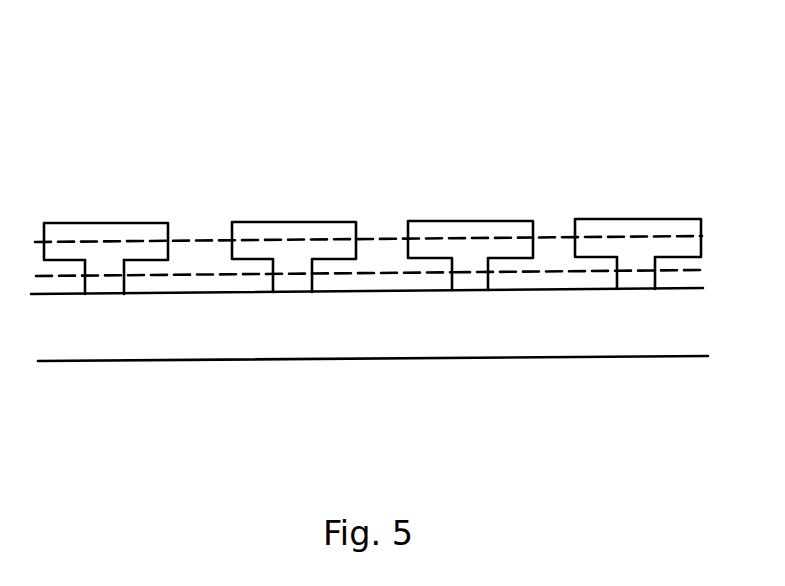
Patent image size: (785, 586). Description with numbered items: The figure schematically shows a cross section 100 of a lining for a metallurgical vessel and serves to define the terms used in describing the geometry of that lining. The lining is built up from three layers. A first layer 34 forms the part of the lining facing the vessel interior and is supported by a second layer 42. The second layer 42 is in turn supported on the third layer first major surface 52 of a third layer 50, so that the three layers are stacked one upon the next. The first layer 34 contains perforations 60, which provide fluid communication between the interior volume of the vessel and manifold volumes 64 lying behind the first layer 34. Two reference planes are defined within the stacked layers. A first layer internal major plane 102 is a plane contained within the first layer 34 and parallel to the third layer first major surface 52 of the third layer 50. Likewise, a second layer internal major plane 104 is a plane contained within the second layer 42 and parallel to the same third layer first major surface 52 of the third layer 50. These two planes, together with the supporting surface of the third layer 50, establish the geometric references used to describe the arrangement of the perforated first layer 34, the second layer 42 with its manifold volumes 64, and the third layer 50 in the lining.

The cross section 100 is at (275, 85).
The first layer 34 is at (73, 233).
The second layer 42 is at (102, 266).
The perforations 60 is at (205, 228).
The first layer internal major plane 102 is at (552, 237).
The manifold volumes 64 is at (366, 278).
The second layer internal major plane 104 is at (557, 272).
The third layer 50 is at (201, 328).
The third layer first major surface 52 is at (682, 288).